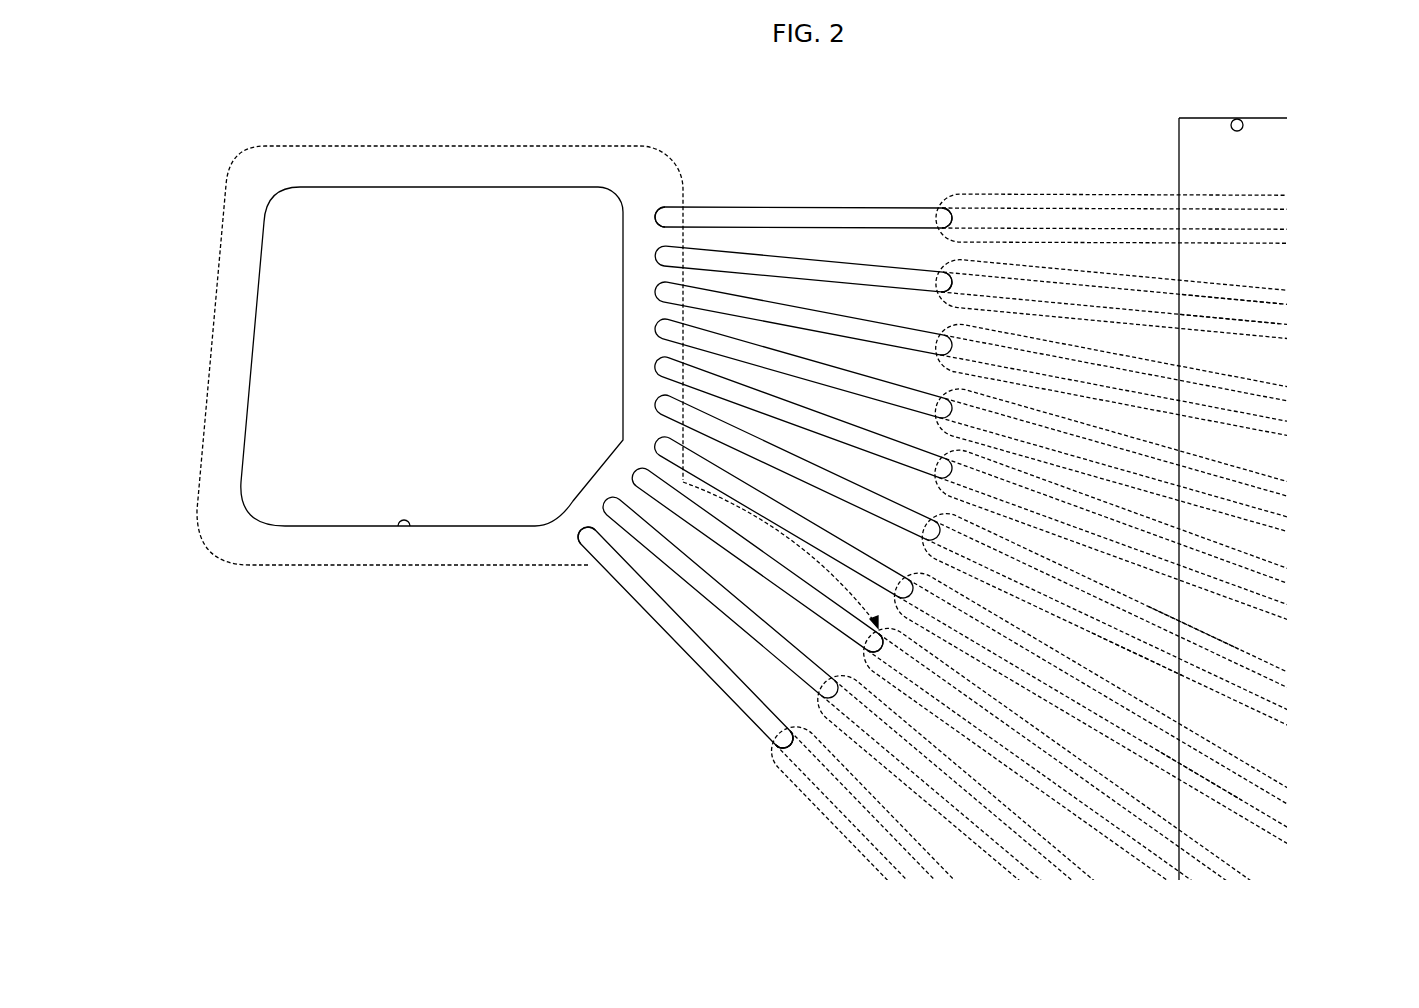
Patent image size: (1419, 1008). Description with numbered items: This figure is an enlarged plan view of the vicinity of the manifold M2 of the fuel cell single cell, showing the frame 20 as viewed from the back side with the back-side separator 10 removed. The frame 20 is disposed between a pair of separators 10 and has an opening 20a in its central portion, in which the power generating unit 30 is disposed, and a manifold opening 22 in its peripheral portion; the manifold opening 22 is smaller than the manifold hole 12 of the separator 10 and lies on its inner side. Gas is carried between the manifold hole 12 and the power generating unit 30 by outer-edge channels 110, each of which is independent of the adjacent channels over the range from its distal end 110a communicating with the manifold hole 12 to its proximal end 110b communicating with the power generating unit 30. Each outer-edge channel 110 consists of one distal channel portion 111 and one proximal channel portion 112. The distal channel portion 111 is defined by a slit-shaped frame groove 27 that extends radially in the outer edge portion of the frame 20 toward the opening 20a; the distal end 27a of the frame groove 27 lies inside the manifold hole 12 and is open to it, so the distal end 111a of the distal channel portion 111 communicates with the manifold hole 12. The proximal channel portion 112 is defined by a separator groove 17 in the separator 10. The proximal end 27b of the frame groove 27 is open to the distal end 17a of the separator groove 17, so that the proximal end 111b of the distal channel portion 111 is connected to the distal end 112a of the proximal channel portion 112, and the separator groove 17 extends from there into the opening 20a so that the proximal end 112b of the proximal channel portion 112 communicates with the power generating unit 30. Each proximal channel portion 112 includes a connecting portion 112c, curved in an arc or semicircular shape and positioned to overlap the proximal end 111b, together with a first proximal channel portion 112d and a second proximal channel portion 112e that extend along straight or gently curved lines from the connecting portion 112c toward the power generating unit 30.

The manifold M2 is at (382, 423).
The separator 10 is at (618, 820).
The manifold hole 12 is at (327, 565).
The separator groove 17 is at (927, 793).
The distal end of separator groove 17a is at (773, 724).
The frame 20 is at (673, 820).
The opening 20a is at (1237, 118).
The manifold opening 22 is at (404, 530).
The frame groove 27 is at (653, 615).
The distal end of frame groove 27a is at (580, 530).
The proximal end of frame groove 27b is at (780, 742).
The power generating unit 30 is at (1193, 464).
The outer-edge channel 110 is at (982, 110).
The distal end of outer-edge channel 110a is at (553, 233).
The proximal end of outer-edge channel 110b is at (1287, 562).
The distal channel portion 111 is at (876, 204).
The distal end of distal channel portion 111a is at (664, 214).
The proximal end of distal channel portion 111b is at (947, 222).
The proximal channel portion 112 is at (976, 192).
The distal end of proximal channel portion 112a is at (930, 280).
The proximal end of proximal channel portion 112b is at (1217, 318).
The connecting portion 112c is at (683, 482).
The first proximal channel portion 112d is at (1225, 812).
The second proximal channel portion 112e is at (1105, 829).